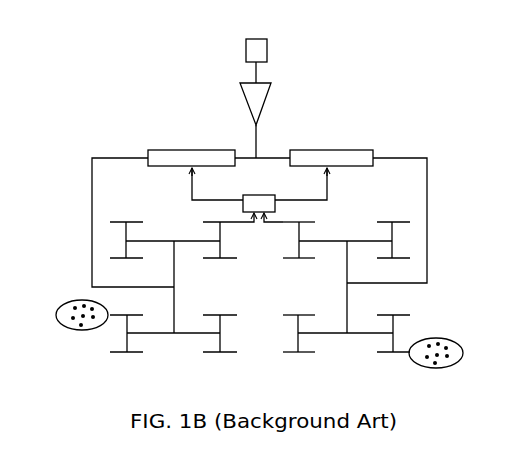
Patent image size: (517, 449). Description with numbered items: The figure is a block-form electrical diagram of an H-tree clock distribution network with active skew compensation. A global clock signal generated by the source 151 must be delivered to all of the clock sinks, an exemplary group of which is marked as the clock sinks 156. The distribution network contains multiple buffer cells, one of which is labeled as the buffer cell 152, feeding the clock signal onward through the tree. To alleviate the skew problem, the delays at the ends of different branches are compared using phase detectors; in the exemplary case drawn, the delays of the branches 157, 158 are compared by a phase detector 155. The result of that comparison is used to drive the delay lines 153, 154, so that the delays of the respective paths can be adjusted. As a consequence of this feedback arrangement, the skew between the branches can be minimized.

The global clock source 151 is at (254, 45).
The buffer cell 152 is at (287, 104).
The delay line 153 is at (166, 141).
The delay line 154 is at (358, 141).
The phase detector 155 is at (307, 196).
The clock sinks 156 is at (66, 319).
The branch 157 is at (178, 230).
The branch 158 is at (321, 259).